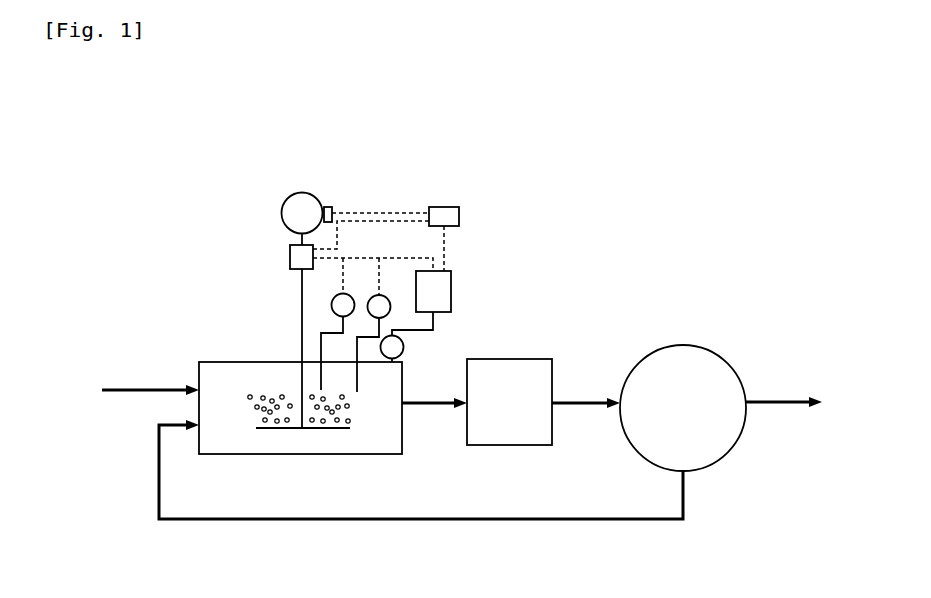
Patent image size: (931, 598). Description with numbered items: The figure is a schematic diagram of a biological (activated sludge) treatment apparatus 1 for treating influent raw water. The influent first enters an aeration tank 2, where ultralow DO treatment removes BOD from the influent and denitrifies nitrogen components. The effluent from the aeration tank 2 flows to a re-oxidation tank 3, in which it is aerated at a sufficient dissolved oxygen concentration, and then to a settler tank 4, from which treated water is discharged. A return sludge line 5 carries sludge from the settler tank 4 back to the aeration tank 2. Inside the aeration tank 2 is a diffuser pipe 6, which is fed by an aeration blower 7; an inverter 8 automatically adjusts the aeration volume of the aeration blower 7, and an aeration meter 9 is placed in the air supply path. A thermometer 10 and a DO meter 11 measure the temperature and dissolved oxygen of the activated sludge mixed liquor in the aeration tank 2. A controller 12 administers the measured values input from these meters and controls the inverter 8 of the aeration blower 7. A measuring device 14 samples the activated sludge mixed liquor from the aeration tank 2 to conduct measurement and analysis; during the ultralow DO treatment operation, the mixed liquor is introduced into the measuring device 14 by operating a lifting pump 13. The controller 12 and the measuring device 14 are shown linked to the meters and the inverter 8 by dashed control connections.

The biological treatment apparatus 1 is at (415, 156).
The aeration tank 2 is at (228, 368).
The re-oxidation tank 3 is at (514, 368).
The settler tank 4 is at (697, 341).
The return sludge line 5 is at (432, 522).
The diffuser pipe 6 is at (333, 430).
The aeration blower 7 is at (281, 215).
The inverter 8 is at (330, 207).
The aeration meter 9 is at (290, 260).
The thermometer 10 is at (350, 297).
The DO meter 11 is at (386, 299).
The controller 12 is at (459, 218).
The lifting pump 13 is at (402, 349).
The measuring device 14 is at (451, 288).